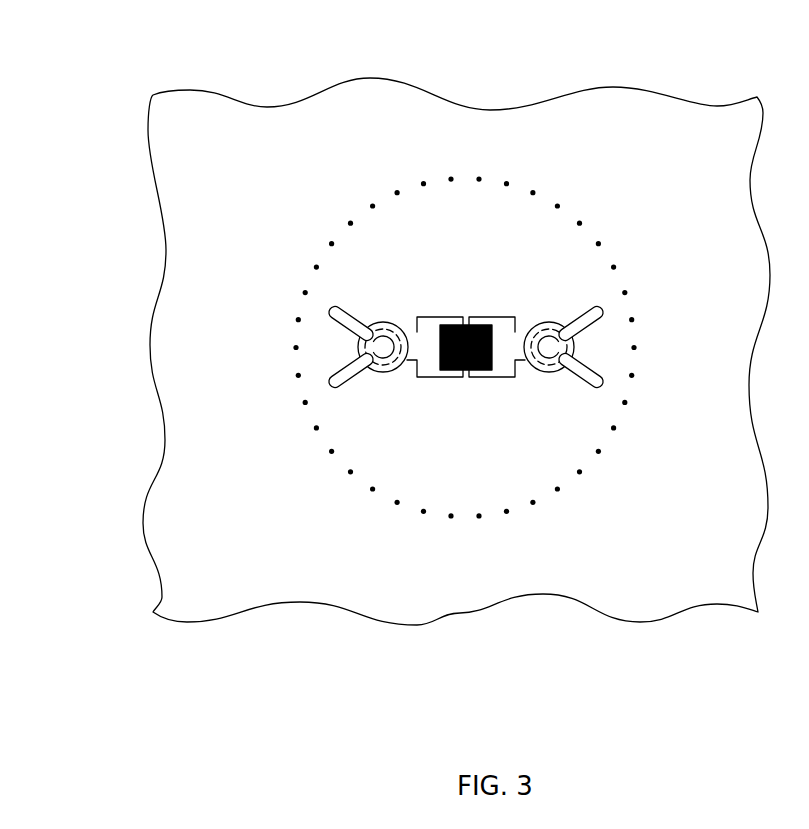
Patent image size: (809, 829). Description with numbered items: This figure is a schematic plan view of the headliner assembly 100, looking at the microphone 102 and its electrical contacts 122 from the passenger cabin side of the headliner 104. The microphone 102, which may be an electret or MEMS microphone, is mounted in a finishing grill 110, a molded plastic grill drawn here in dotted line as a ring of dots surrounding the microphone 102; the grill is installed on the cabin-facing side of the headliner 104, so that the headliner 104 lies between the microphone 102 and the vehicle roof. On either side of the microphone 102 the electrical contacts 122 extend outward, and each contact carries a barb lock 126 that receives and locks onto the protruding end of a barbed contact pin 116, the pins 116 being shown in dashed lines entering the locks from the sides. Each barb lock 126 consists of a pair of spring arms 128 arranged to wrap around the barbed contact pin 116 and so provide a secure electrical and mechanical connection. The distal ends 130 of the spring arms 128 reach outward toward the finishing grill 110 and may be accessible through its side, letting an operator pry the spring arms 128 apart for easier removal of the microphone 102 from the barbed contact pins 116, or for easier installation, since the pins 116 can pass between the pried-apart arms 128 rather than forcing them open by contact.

The headliner assembly 100 is at (100, 76).
The microphone 102 is at (466, 378).
The headliner 104 is at (285, 524).
The finishing grill 110 is at (580, 473).
The barbed contact pins 116 is at (348, 347).
The electrical contacts 122 is at (425, 378).
The barb locks 126 is at (372, 308).
The spring arms 128 is at (386, 320).
The distal ends 130 is at (324, 303).